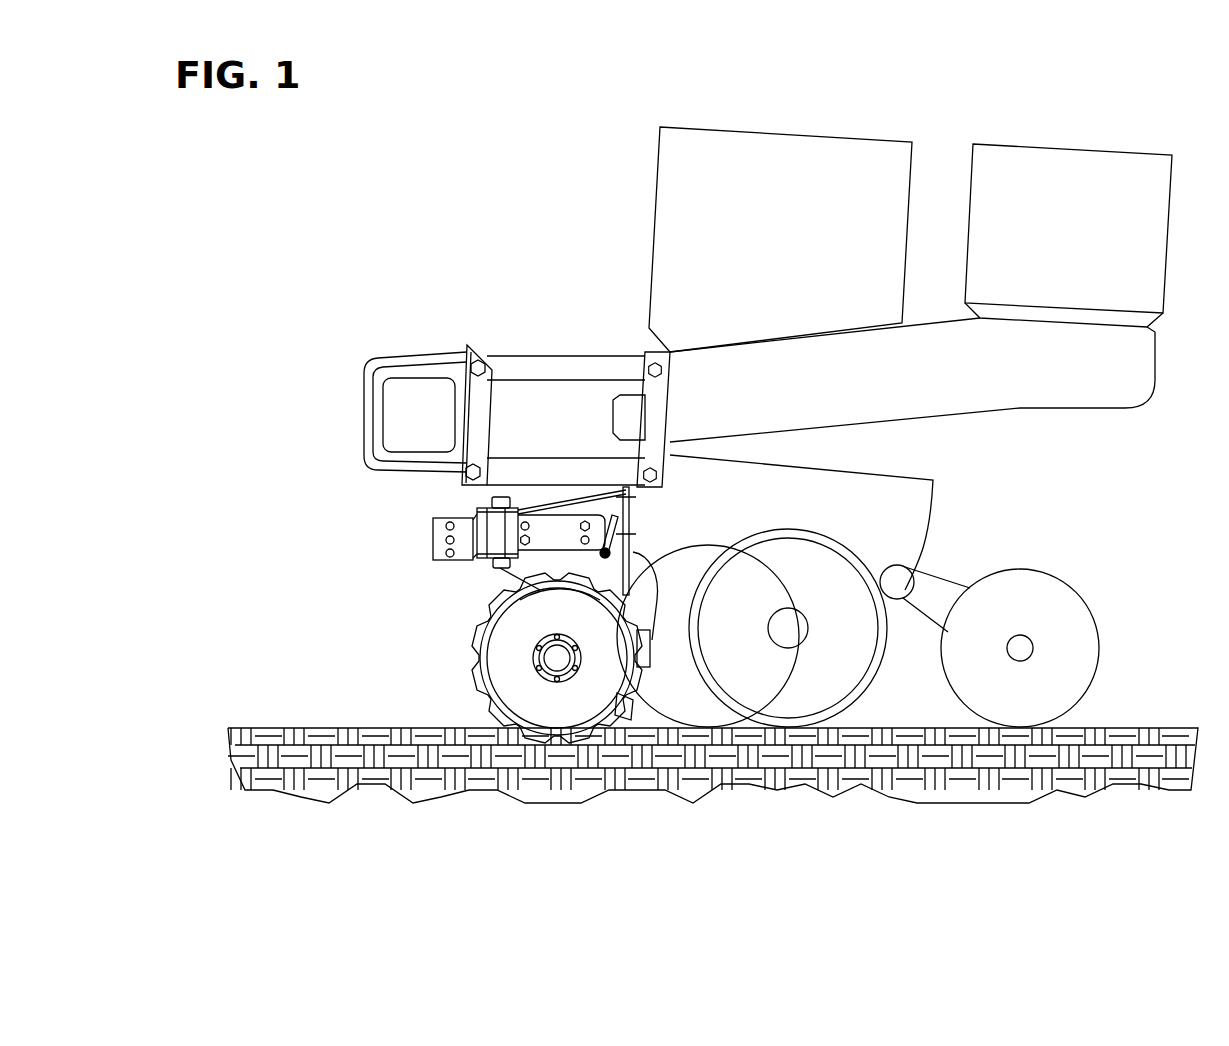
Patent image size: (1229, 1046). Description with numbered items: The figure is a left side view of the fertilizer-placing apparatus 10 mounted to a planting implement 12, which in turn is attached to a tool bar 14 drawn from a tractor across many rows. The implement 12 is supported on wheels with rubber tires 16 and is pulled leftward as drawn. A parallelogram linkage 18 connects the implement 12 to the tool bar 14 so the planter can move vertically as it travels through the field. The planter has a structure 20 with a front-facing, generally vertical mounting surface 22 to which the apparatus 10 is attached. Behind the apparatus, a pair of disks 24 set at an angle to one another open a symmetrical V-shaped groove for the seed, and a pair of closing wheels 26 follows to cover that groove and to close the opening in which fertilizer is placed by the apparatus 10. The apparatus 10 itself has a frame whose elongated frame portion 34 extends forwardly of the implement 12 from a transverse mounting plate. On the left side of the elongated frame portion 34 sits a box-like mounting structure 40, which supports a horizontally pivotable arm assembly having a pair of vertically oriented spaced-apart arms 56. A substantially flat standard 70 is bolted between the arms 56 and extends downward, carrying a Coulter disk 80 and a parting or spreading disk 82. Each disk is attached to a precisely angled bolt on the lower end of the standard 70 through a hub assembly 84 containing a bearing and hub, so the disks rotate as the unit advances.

The apparatus 10 is at (318, 614).
The planting implement 12 is at (1083, 466).
The tool bar 14 is at (378, 418).
The wheels with rubber tires 16 is at (818, 693).
The parallelogram linkage 18 is at (575, 473).
The structure 20 is at (645, 512).
The mounting surface 22 is at (622, 558).
The disks 24 is at (697, 718).
The closing wheels 26 is at (1083, 655).
The elongated frame portion 34 is at (562, 503).
The mounting structure 40 is at (462, 506).
The arms 56 is at (540, 546).
The standard 70 is at (551, 567).
The Coulter disk 80 is at (521, 716).
The spreading disk 82 is at (545, 710).
The hub assembly 84 is at (527, 670).